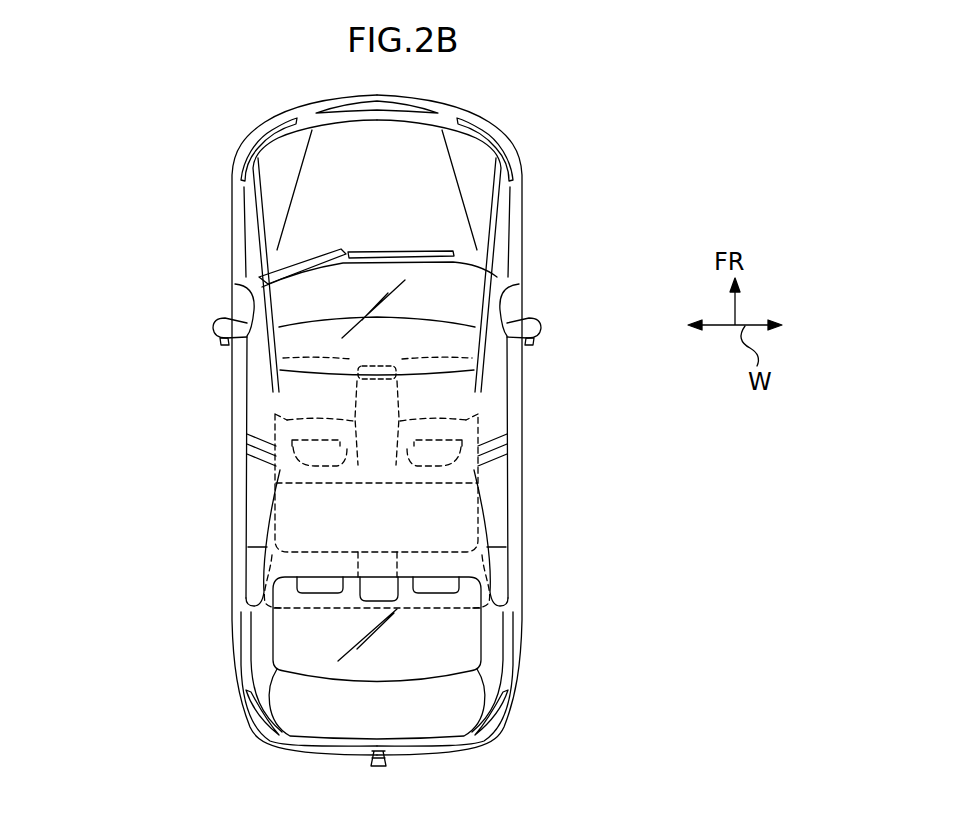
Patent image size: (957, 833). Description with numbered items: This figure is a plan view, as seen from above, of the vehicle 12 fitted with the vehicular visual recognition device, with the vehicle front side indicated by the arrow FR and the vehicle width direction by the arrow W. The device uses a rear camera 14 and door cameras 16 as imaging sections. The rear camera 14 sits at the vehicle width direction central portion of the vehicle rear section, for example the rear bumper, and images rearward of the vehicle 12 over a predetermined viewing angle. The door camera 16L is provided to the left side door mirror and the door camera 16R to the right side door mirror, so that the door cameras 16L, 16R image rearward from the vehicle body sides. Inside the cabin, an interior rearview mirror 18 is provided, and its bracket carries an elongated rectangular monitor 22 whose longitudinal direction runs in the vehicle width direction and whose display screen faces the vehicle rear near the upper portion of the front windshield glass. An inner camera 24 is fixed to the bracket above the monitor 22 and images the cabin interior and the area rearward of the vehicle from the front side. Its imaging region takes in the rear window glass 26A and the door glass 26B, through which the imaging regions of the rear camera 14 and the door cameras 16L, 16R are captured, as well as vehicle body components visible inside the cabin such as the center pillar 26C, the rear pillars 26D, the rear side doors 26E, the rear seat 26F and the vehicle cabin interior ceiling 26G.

The vehicle 12 is at (559, 242).
The rear camera 14 is at (403, 757).
The door cameras 16 is at (375, 359).
The door camera 16L is at (213, 330).
The door camera 16R is at (541, 340).
The interior rearview mirror 18 is at (585, 258).
The monitor 22 is at (373, 368).
The inner camera 24 is at (380, 370).
The rear window glass 26A is at (460, 648).
The door glass 26B is at (258, 478).
The center pillar 26C is at (253, 457).
The rear pillars 26D is at (268, 584).
The rear side doors 26E is at (238, 471).
The rear seat 26F is at (408, 565).
The vehicle cabin interior ceiling 26G is at (362, 553).